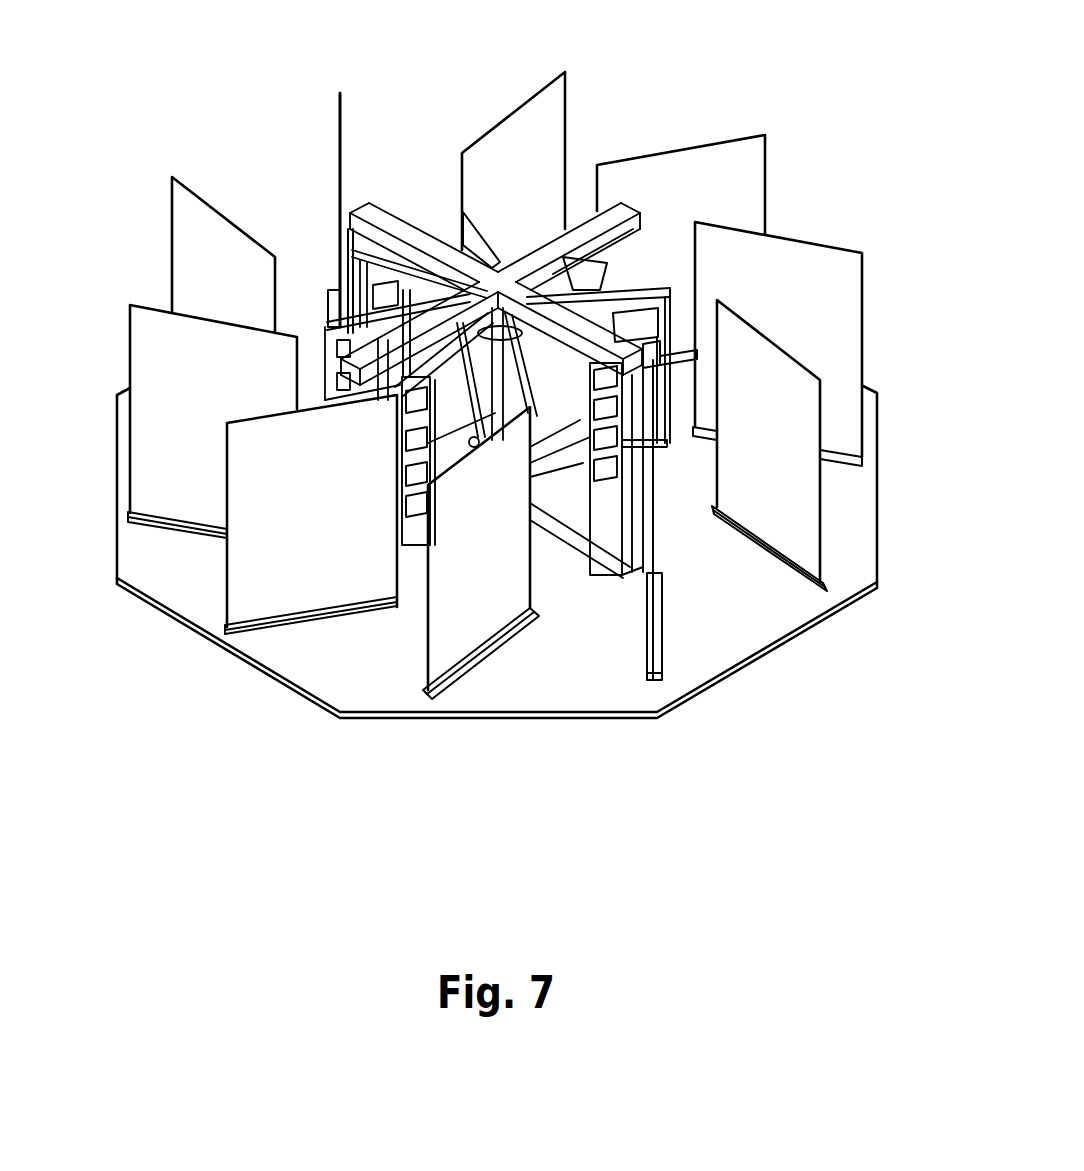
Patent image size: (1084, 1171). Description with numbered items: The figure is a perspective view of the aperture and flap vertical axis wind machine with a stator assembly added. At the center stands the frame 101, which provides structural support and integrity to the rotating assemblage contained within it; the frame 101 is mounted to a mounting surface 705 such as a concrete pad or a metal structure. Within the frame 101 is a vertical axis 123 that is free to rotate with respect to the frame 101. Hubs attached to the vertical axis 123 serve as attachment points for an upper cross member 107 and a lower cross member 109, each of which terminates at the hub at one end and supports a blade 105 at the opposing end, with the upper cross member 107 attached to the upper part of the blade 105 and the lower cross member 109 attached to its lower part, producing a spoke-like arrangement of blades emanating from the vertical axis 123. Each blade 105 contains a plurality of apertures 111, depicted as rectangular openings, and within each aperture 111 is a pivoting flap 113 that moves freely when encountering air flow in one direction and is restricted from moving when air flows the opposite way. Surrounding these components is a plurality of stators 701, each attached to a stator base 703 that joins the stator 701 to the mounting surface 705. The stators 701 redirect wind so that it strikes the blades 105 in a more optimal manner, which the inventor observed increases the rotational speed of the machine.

The frame 101 is at (373, 212).
The blade 105 is at (333, 340).
The upper cross member 107 is at (652, 290).
The lower cross member 109 is at (667, 447).
The aperture 111 is at (357, 250).
The flap 113 is at (660, 316).
The vertical axis 123 is at (480, 438).
The stator 701 is at (340, 93).
The stator base 703 is at (177, 530).
The mounting surface 705 is at (540, 681).